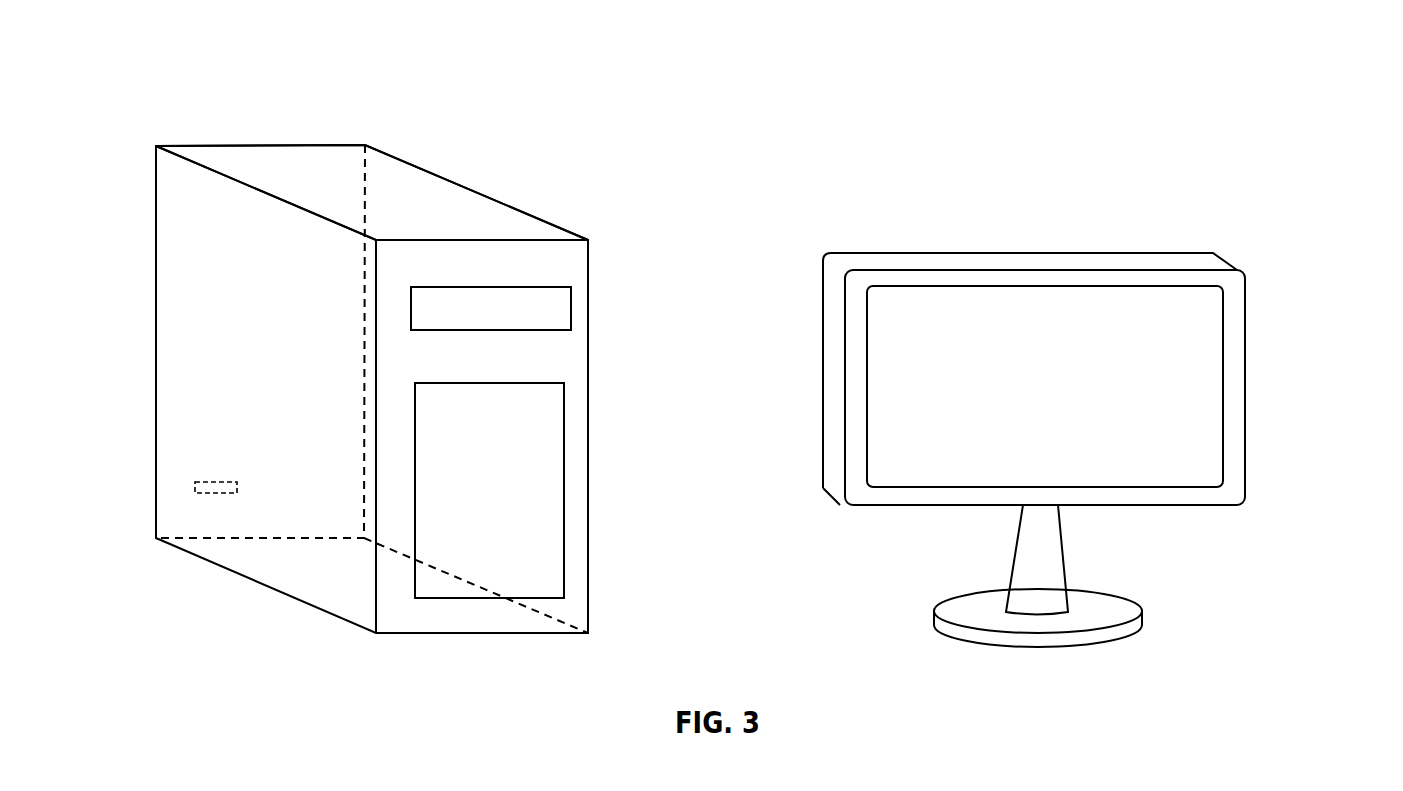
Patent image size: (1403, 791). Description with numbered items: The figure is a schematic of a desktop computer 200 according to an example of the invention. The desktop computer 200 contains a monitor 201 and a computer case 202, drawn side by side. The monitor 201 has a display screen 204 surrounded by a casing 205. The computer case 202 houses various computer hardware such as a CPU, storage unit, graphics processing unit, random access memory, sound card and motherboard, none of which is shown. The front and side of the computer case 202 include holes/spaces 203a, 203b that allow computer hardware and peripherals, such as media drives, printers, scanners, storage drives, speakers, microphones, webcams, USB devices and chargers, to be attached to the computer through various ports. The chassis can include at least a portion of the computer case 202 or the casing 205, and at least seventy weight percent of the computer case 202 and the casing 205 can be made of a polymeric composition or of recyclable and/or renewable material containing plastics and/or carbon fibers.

The desktop computer 200 is at (142, 133).
The monitor 201 is at (1127, 223).
The computer case 202 is at (510, 205).
The hole/space 203a is at (545, 289).
The hole/space 203b is at (564, 578).
The display screen 204 is at (1188, 393).
The casing 205 is at (1245, 323).